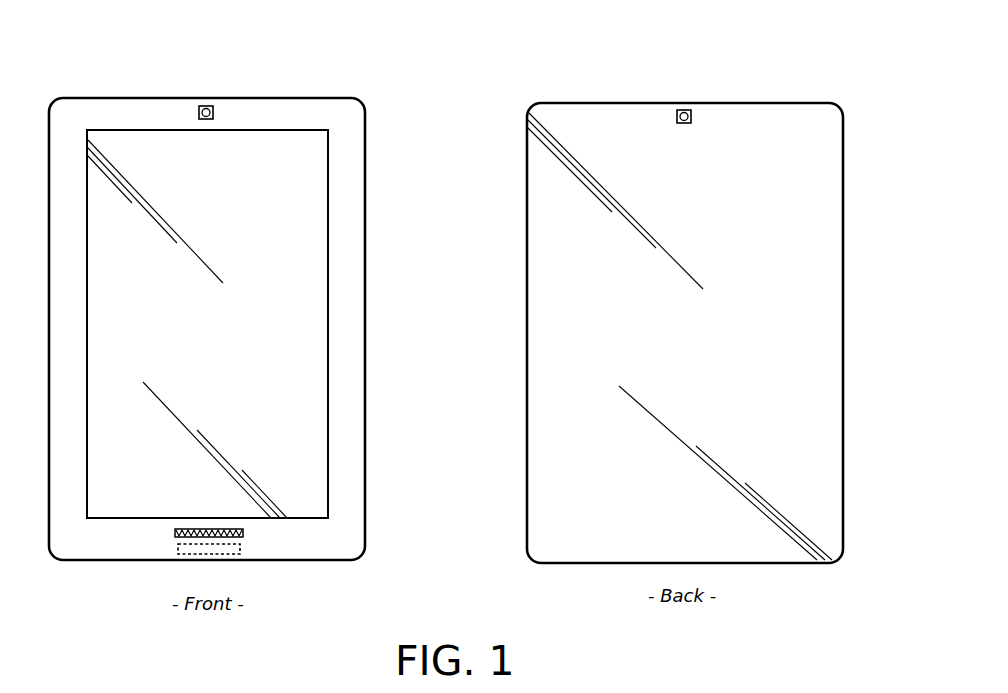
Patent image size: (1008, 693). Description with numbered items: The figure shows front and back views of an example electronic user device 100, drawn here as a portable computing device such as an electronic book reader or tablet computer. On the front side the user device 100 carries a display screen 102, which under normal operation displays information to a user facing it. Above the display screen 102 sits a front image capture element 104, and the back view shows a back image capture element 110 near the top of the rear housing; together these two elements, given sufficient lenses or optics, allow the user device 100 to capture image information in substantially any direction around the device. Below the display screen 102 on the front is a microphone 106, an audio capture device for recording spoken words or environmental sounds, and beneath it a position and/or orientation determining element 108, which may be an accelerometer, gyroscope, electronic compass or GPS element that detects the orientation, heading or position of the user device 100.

The electronic user device 100 is at (840, 77).
The display screen 102 is at (328, 250).
The front image capture element 104 is at (213, 113).
The microphone 106 is at (175, 533).
The position and/or orientation determining element 108 is at (240, 545).
The back image capture element 110 is at (683, 123).